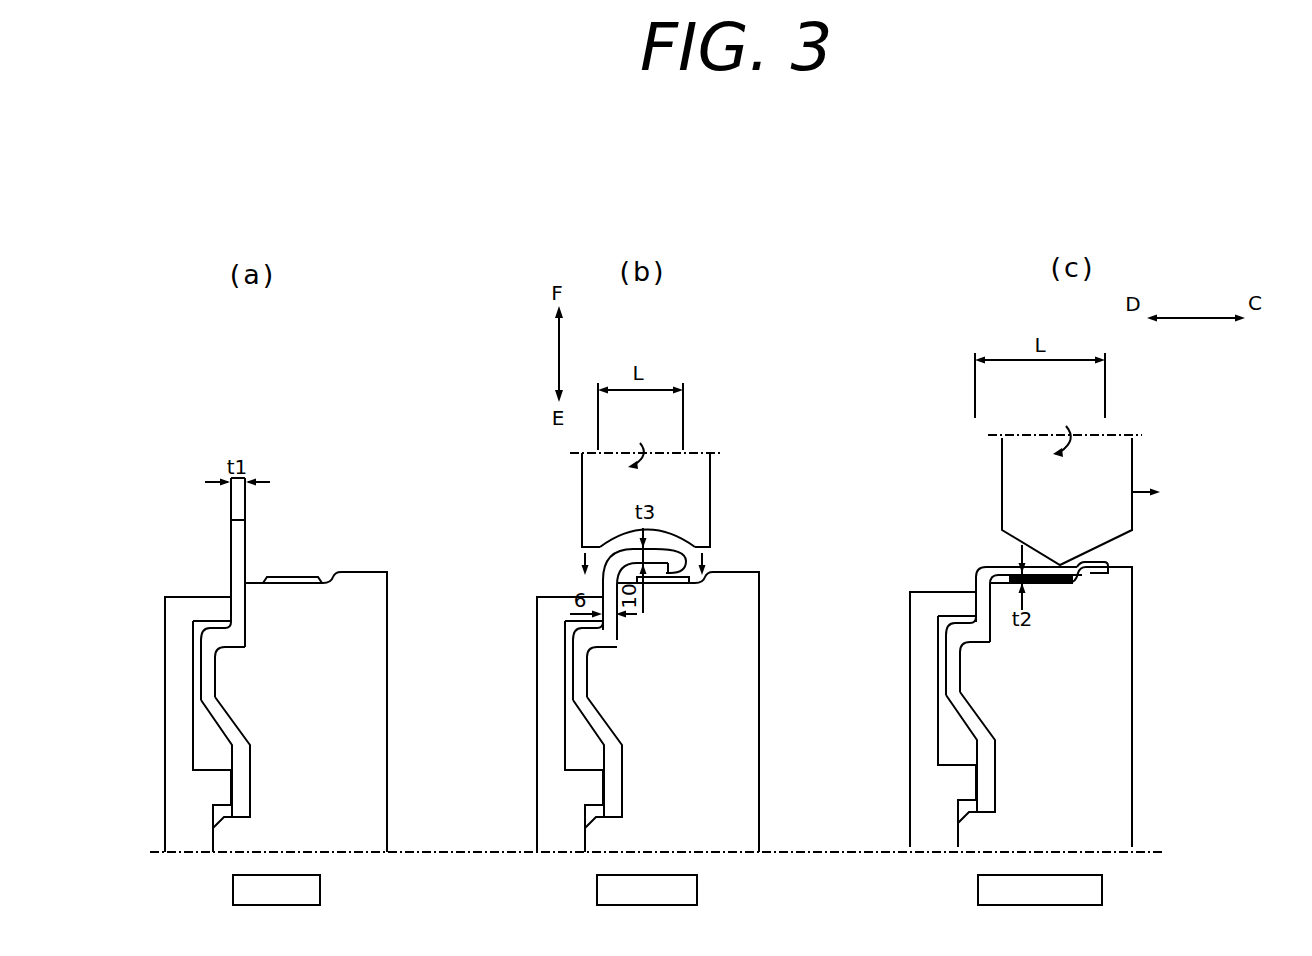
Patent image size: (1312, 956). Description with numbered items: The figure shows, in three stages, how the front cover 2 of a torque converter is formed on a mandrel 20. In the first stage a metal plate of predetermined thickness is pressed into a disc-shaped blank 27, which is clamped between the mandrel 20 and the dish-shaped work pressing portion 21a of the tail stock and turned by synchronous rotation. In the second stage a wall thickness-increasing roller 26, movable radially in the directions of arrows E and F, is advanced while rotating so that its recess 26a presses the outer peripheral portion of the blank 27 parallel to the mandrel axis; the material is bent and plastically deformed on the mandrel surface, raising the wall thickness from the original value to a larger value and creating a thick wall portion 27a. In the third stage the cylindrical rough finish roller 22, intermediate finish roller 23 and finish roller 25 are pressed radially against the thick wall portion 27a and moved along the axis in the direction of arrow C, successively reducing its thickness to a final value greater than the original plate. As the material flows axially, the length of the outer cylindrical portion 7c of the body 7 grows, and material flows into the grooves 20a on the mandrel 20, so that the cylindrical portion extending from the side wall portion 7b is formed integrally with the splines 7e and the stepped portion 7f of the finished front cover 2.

The front cover 2 is at (959, 559).
The body 7 is at (690, 646).
The side wall portion 7b is at (577, 668).
The outer cylindrical portion 7c is at (705, 567).
The splines 7e is at (1050, 580).
The stepped portion 7f is at (1062, 578).
The mandrel 20 is at (694, 673).
The grooves 20a is at (284, 577).
The work pressing portion 21a is at (182, 756).
The rough finish roller 22 is at (1138, 501).
The intermediate finish roller 23 is at (1138, 501).
The finish roller 25 is at (1132, 452).
The wall thickness-increasing roller 26 is at (694, 495).
The recess 26a is at (698, 545).
The blank 27 is at (663, 646).
The thick wall portion 27a is at (668, 558).